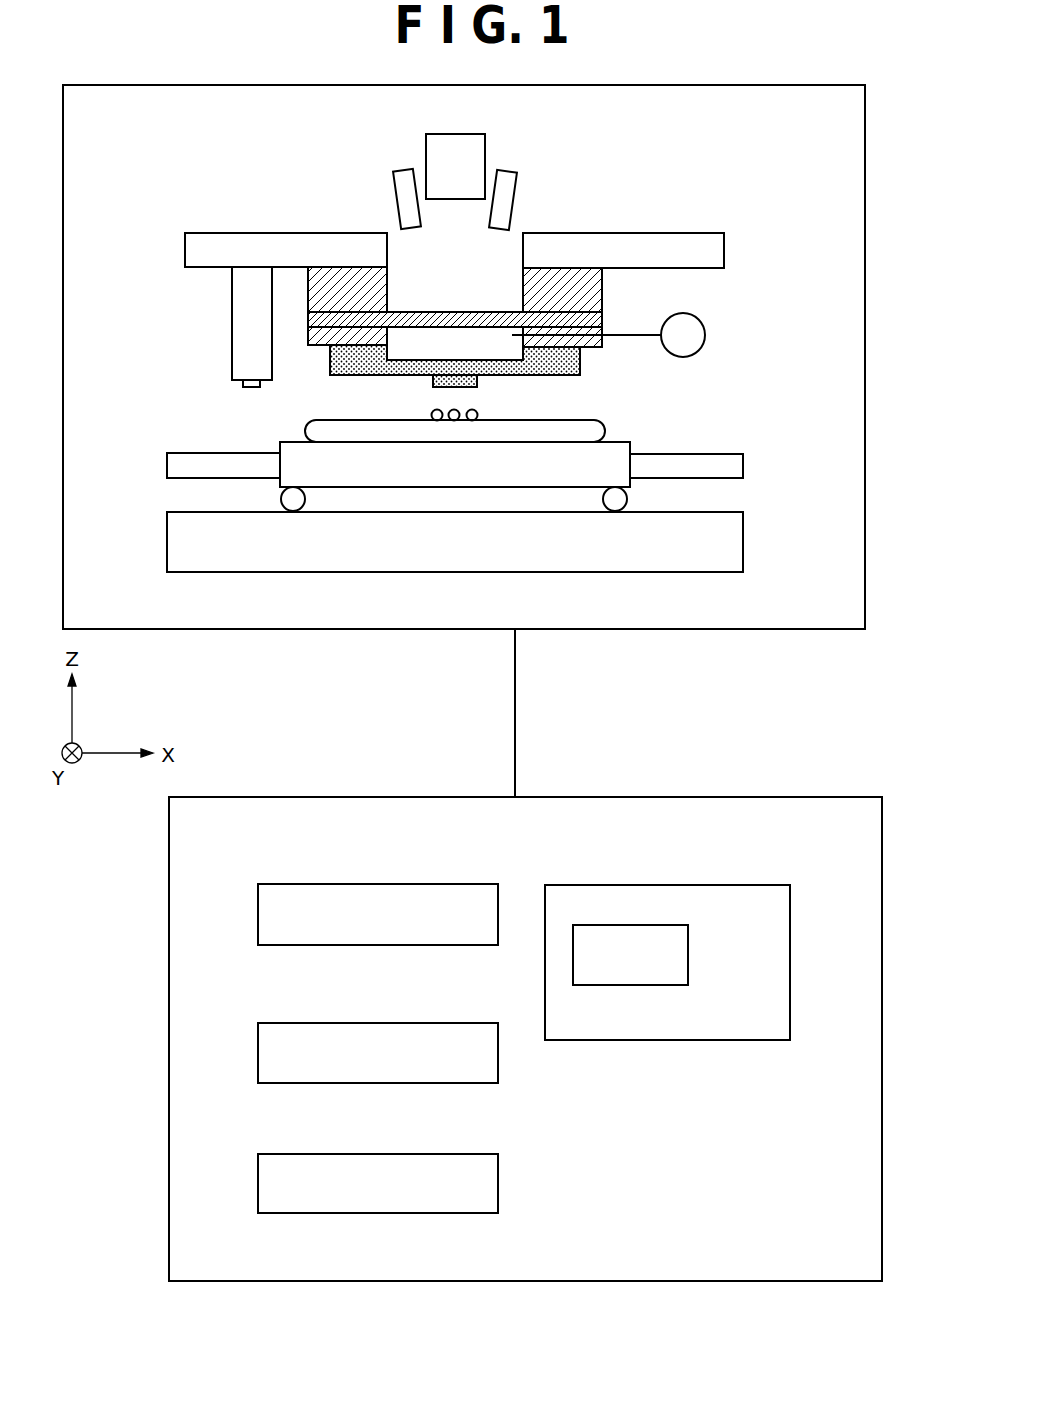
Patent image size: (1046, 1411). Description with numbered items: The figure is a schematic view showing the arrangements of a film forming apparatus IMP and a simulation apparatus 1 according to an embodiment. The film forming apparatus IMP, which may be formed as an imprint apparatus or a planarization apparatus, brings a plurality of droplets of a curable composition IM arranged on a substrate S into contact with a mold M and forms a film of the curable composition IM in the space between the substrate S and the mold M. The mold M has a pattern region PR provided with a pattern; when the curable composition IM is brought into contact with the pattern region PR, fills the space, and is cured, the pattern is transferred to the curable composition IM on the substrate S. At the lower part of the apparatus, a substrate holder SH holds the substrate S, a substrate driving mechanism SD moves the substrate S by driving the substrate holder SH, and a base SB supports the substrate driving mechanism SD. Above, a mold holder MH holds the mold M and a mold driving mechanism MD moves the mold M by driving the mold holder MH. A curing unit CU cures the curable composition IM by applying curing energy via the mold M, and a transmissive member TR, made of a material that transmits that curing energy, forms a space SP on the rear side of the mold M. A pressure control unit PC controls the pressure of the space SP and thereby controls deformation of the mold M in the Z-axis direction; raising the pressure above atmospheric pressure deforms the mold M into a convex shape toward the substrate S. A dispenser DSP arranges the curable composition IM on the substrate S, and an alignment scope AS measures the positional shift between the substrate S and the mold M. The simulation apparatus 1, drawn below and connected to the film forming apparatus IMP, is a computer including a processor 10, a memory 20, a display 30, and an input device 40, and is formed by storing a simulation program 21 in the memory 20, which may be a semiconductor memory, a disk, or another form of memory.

The film forming apparatus IMP is at (865, 291).
The curing unit CU is at (426, 152).
The alignment scope AS is at (400, 185).
The dispenser DSP is at (232, 357).
The mold holder MH is at (322, 345).
The mold driving mechanism MD is at (602, 290).
The transmissive member TR is at (430, 312).
The space SP is at (438, 353).
The mold M is at (386, 377).
The pattern region PR is at (443, 387).
The curable composition IM is at (480, 414).
The substrate S is at (584, 437).
The substrate holder SH is at (618, 447).
The substrate driving mechanism SD is at (713, 463).
The base SB is at (740, 543).
The pressure control unit PC is at (706, 335).
The simulation apparatus 1 is at (839, 797).
The processor 10 is at (258, 913).
The memory 20 is at (790, 914).
The simulation program 21 is at (689, 948).
The display 30 is at (258, 1052).
The input device 40 is at (258, 1182).